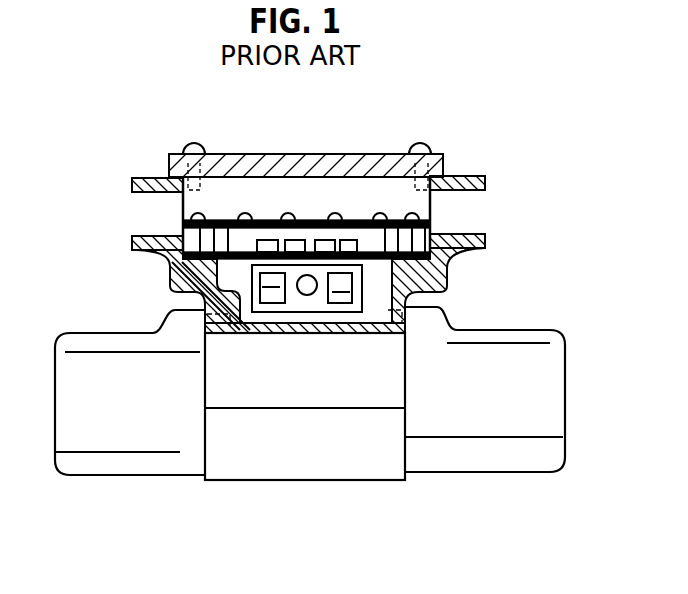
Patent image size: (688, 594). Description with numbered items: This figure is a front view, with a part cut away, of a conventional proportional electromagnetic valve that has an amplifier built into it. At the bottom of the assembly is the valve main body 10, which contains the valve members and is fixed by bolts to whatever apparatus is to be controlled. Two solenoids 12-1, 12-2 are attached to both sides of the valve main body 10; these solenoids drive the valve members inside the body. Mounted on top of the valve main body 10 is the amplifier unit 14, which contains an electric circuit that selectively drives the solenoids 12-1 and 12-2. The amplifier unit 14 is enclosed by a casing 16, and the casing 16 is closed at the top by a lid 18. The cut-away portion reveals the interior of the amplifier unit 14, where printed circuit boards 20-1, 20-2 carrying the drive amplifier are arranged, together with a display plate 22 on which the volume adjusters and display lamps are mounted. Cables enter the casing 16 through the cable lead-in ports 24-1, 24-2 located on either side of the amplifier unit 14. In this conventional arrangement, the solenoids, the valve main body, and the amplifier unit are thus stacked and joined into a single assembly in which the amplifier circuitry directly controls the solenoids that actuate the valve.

The valve main body 10 is at (322, 464).
The solenoid 12-1 is at (125, 463).
The solenoid 12-2 is at (533, 337).
The amplifier unit 14 is at (438, 284).
The casing 16 is at (438, 271).
The lid 18 is at (231, 157).
The printed circuit board 20-1 is at (190, 258).
The printed circuit board 20-2 is at (232, 283).
The display plate 22 is at (358, 216).
The cable lead-in port 24-1 is at (132, 205).
The cable lead-in port 24-2 is at (485, 210).